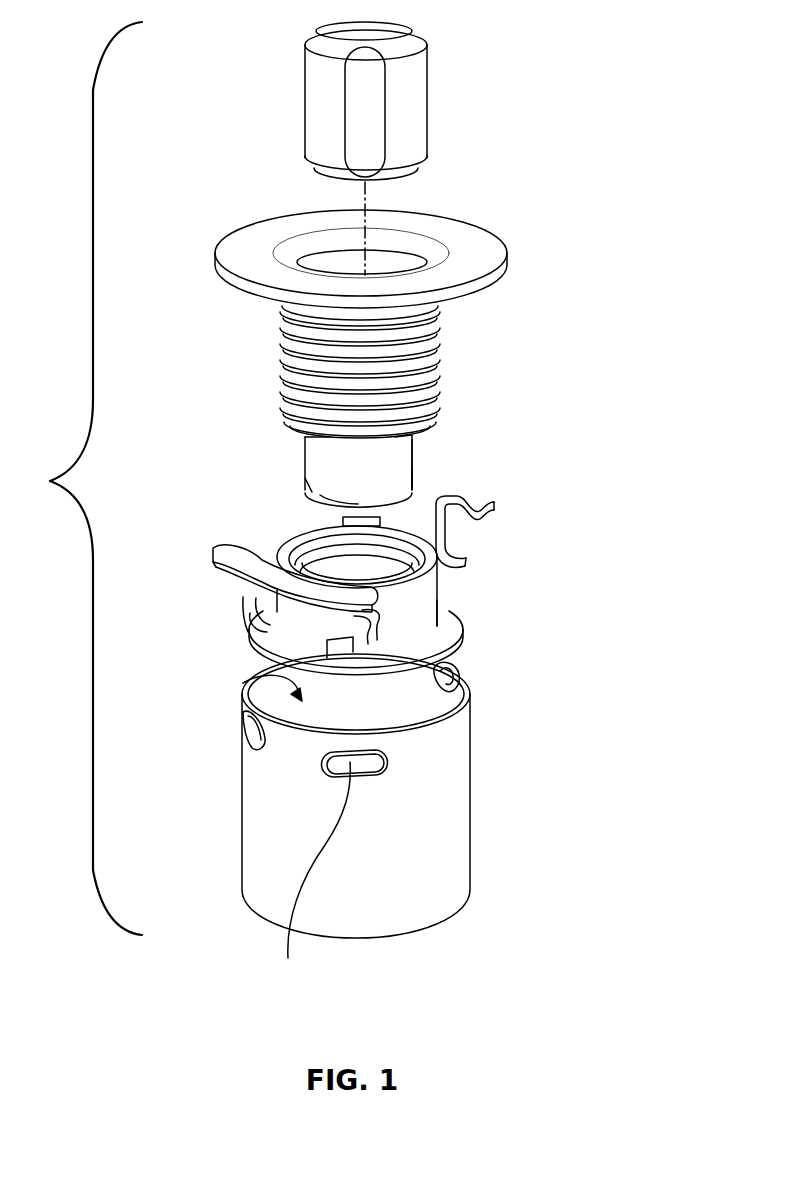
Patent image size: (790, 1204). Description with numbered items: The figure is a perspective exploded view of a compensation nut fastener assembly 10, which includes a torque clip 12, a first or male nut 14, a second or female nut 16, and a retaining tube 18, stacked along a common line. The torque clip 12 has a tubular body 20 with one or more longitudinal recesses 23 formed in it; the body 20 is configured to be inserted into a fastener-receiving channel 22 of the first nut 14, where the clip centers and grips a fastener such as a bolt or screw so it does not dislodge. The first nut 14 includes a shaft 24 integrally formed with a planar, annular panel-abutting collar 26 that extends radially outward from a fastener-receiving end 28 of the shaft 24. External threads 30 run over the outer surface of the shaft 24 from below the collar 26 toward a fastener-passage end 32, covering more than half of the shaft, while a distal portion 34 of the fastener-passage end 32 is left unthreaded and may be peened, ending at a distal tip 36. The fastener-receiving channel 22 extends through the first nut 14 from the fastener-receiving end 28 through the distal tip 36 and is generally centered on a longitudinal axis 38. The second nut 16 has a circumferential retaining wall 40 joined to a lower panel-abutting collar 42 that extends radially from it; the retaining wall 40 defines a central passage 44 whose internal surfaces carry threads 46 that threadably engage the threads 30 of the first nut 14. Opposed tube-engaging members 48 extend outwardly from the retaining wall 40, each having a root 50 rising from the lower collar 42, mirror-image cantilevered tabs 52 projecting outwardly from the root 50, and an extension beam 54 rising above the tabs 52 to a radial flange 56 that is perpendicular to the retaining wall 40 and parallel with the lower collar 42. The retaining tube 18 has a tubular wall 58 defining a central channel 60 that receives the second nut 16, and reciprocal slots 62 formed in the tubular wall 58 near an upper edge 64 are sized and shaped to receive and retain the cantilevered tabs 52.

The compensation nut fastener assembly 10 is at (50, 481).
The torque clip 12 is at (432, 101).
The first nut 14 is at (389, 349).
The second nut 16 is at (390, 705).
The retaining tube 18 is at (380, 820).
The body 20 is at (305, 88).
The fastener-receiving channel 22 is at (392, 258).
The longitudinal recesses 23 is at (375, 75).
The shaft 24 is at (308, 445).
The panel-abutting collar 26 is at (236, 248).
The fastener-receiving end 28 is at (438, 256).
The threads 30 is at (283, 355).
The fastener-passage end 32 is at (415, 455).
The distal portion 34 is at (312, 484).
The distal tip 36 is at (412, 488).
The longitudinal axis 38 is at (362, 208).
The retaining wall 40 is at (445, 605).
The lower panel-abutting collar 42 is at (465, 645).
The central passage 44 is at (322, 550).
The threads 46 is at (445, 578).
The tube-engaging members 48 is at (486, 503).
The root 50 is at (243, 683).
The cantilevered tabs 52 is at (467, 567).
The extension beam 54 is at (320, 492).
The radial flange 56 is at (213, 560).
The tubular wall 58 is at (442, 852).
The central channel 60 is at (252, 655).
The reciprocal slots 62 is at (311, 874).
The upper edge 64 is at (448, 707).